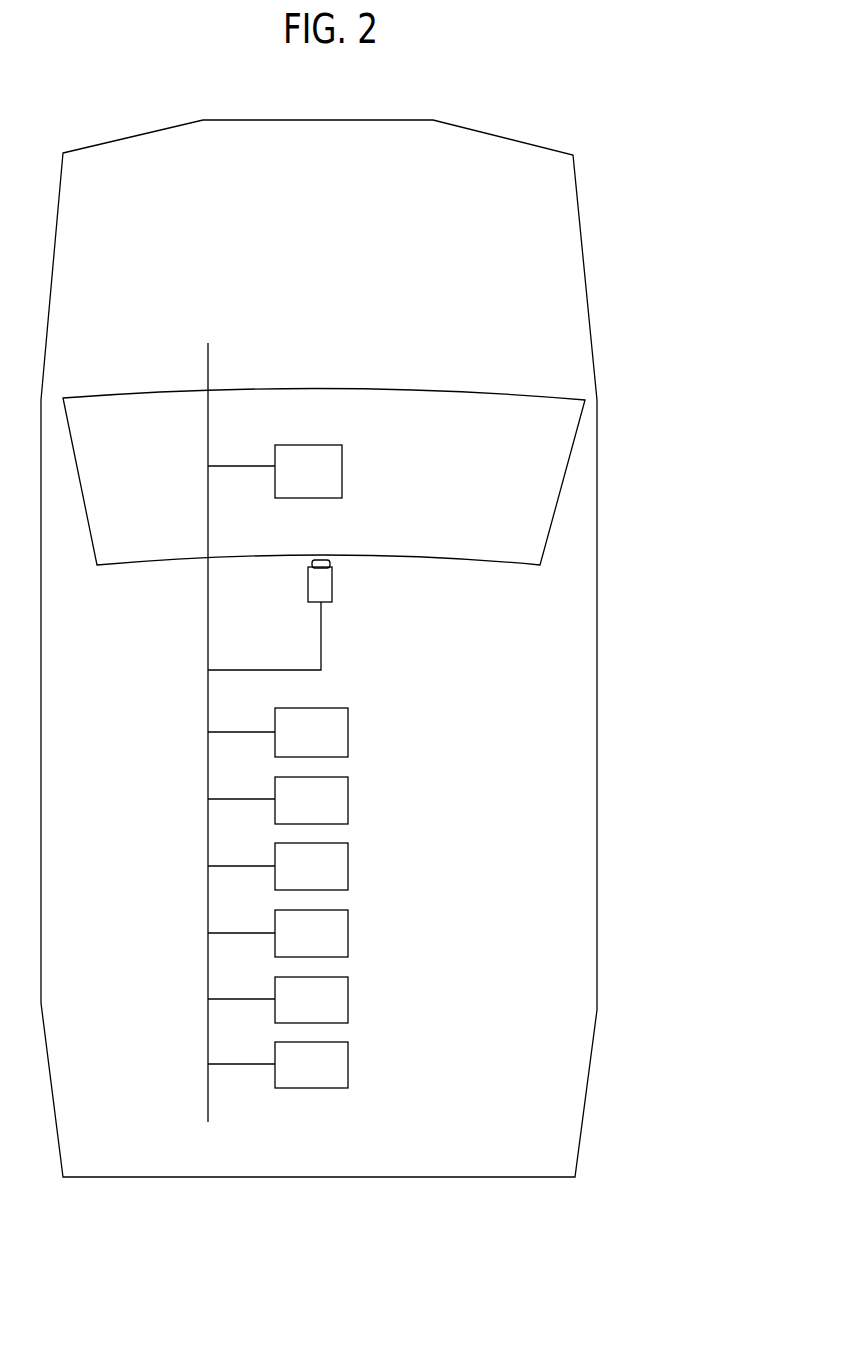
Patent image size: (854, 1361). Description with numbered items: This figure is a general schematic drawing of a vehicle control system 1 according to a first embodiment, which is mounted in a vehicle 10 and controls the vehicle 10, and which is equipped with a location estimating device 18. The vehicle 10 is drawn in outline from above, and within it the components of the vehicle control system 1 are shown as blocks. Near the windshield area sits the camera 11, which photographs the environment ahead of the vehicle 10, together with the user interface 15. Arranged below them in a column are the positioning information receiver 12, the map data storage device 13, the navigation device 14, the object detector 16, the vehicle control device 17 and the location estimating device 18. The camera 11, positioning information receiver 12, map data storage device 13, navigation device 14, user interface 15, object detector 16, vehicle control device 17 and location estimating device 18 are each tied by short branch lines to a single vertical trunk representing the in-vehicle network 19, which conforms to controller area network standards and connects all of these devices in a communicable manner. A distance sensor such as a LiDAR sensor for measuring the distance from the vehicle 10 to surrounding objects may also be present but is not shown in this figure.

The vehicle control system 1 is at (403, 648).
The vehicle 10 is at (590, 1077).
The camera 11 is at (332, 595).
The positioning information receiver 12 is at (348, 725).
The map data storage device 13 is at (348, 794).
The navigation device 14 is at (348, 860).
The user interface 15 is at (307, 445).
The object detector 16 is at (348, 927).
The vehicle control device 17 is at (348, 994).
The location estimating device 18 is at (348, 1059).
The in-vehicle network 19 is at (208, 842).